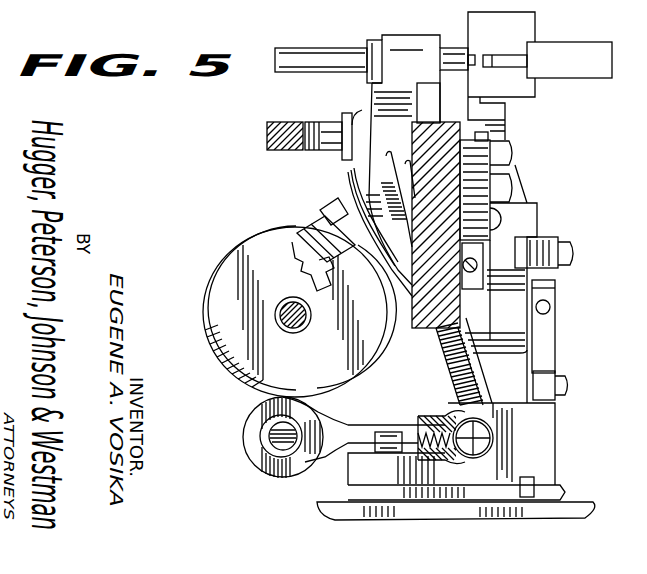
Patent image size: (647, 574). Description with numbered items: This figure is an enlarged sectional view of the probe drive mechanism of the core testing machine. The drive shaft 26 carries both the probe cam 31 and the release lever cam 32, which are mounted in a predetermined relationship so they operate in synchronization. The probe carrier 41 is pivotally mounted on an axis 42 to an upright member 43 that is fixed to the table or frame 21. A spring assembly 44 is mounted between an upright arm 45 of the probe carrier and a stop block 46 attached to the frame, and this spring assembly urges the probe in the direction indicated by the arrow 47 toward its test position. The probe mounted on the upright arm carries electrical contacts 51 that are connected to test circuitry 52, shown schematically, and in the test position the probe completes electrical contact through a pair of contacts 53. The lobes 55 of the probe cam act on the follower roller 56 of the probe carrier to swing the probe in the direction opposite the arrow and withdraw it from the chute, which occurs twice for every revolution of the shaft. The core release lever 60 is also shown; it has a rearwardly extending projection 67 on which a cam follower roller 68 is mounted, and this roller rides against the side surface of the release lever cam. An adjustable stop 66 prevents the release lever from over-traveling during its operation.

The table or frame 21 is at (563, 494).
The drive shaft 26 is at (295, 330).
The probe cam 31 is at (238, 283).
The release lever cam 32 is at (222, 362).
The probe carrier 41 is at (339, 170).
The pivot axis 42 is at (493, 425).
The upright member 43 is at (535, 450).
The spring assembly 44 is at (309, 121).
The upright arm 45 is at (356, 111).
The stop block 46 is at (278, 121).
The arrow 47 is at (321, 33).
The electrical contacts 51 is at (470, 53).
The test circuitry 52 is at (584, 42).
The pair of contacts 53 is at (490, 55).
The lobes 55 is at (232, 248).
The follower roller 56 is at (243, 436).
The core release lever 60 is at (498, 118).
The adjustable stop 66 is at (547, 237).
The rearwardly extending projection 67 is at (340, 203).
The cam follower roller 68 is at (303, 223).